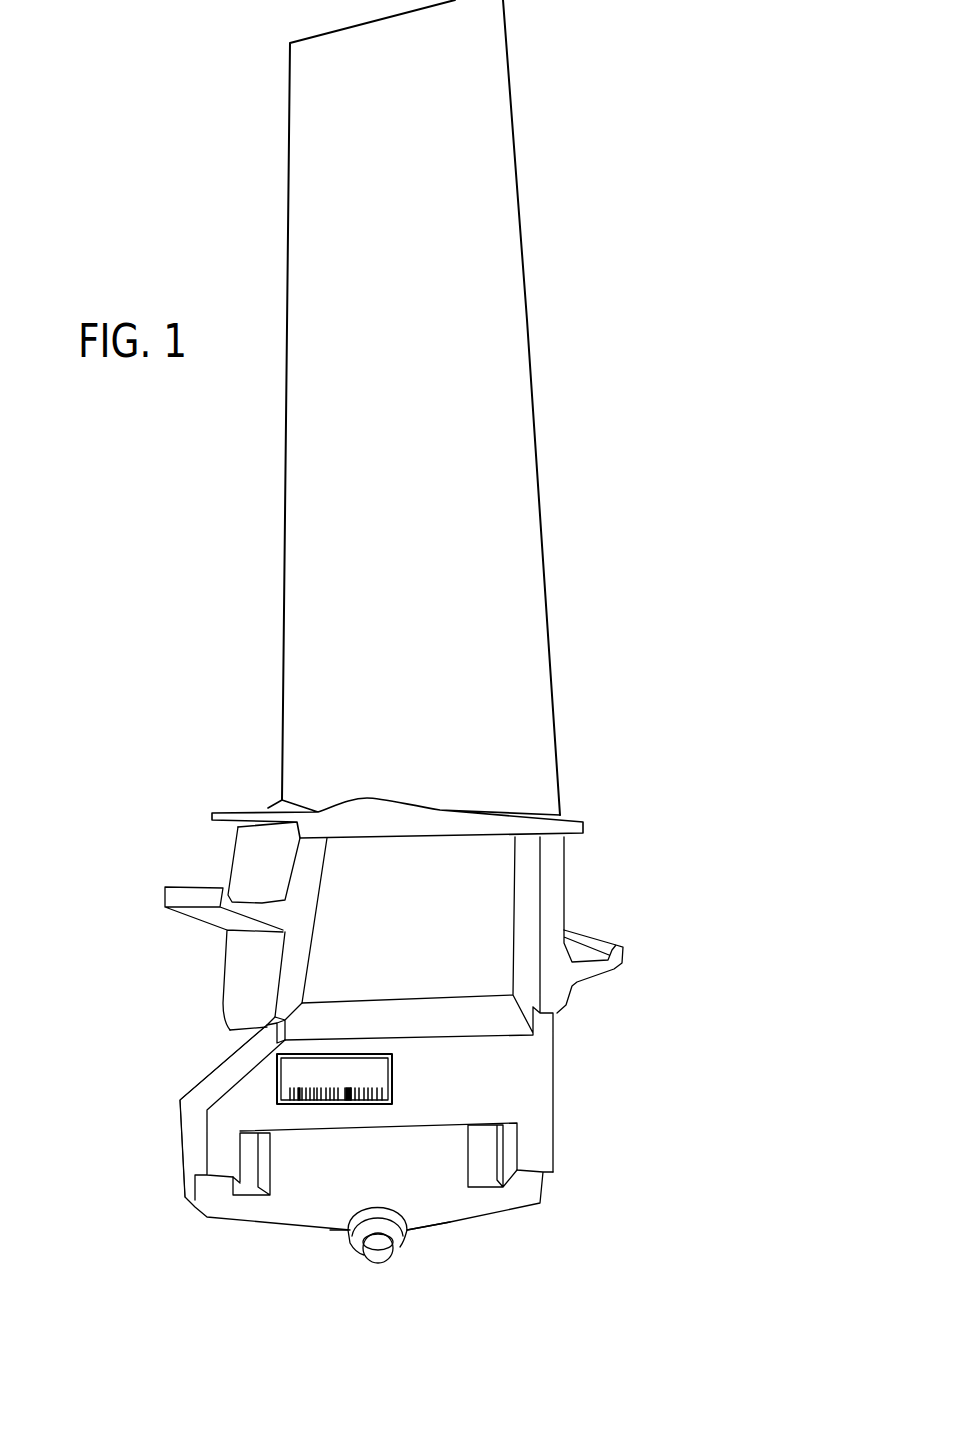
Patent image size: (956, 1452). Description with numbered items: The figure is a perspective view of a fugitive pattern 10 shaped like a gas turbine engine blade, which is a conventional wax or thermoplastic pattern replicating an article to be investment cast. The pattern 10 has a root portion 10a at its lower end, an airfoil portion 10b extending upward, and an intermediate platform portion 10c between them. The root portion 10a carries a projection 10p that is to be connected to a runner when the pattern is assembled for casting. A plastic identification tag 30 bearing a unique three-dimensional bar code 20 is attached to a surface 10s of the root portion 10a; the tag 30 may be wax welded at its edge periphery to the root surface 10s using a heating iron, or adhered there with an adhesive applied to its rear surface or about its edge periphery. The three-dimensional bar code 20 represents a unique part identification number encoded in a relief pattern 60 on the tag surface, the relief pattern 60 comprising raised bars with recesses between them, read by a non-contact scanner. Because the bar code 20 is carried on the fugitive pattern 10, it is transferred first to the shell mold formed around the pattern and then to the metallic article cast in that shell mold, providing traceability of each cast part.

The fugitive pattern 10 is at (381, 638).
The airfoil portion 10b is at (483, 143).
The platform portion 10c is at (578, 930).
The root surface 10s is at (262, 1077).
The root portion 10a is at (533, 1097).
The projection 10p is at (395, 1245).
The three-dimensional bar code 20 is at (270, 1093).
The plastic identification tag 30 is at (380, 1069).
The relief pattern 60 is at (352, 1107).